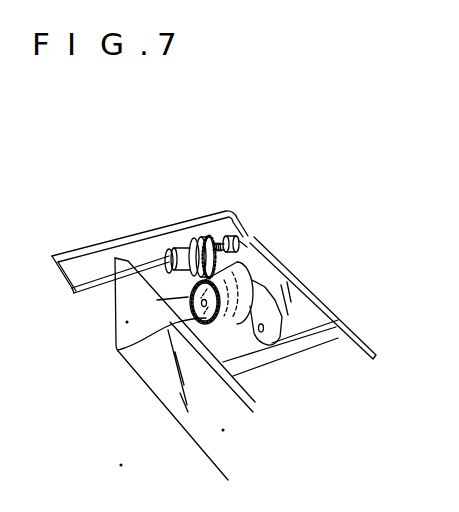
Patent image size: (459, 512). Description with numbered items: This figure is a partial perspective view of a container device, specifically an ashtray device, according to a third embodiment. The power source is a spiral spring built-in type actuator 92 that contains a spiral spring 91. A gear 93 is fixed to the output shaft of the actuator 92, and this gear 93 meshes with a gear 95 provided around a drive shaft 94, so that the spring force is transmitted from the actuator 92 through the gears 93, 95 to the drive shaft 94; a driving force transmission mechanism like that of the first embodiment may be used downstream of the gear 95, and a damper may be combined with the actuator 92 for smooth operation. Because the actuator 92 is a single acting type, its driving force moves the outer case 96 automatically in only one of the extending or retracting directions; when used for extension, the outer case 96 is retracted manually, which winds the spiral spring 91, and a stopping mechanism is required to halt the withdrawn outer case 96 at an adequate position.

The spiral spring 91 is at (245, 258).
The spiral spring built-in type actuator 92 is at (253, 292).
The gear 93 is at (116, 348).
The drive shaft 94 is at (83, 252).
The gear 95 is at (198, 218).
The outer case 96 is at (352, 333).